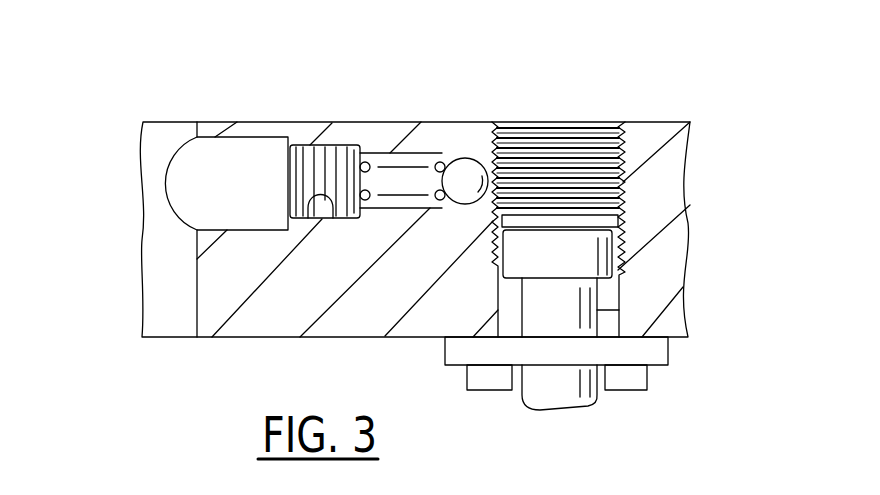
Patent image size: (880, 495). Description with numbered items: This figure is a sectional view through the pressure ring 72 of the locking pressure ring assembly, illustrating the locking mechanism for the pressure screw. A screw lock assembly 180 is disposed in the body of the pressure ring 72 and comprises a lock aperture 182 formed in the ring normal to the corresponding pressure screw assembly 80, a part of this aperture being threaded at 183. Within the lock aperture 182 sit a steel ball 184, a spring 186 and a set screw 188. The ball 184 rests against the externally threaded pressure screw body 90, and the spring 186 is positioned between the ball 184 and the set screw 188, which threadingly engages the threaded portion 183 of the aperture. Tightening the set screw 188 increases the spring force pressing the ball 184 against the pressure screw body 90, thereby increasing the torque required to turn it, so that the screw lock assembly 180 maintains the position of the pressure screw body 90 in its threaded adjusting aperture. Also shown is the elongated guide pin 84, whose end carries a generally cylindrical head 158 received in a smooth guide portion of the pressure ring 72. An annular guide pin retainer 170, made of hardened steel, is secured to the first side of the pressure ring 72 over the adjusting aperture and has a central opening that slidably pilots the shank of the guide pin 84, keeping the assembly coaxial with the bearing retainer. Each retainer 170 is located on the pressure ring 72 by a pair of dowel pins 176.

The pressure ring 72 is at (218, 285).
The pressure screw assembly 80 is at (552, 128).
The guide pin 84 is at (606, 305).
The pressure screw body 90 is at (635, 145).
The cylindrical head 158 is at (592, 253).
The guide pin retainer 170 is at (453, 352).
The dowel pin 176 is at (487, 383).
The screw lock assembly 180 is at (378, 112).
The lock aperture 182 is at (248, 137).
The threaded portion 183 is at (333, 218).
The steel ball 184 is at (465, 157).
The spring 186 is at (392, 197).
The set screw 188 is at (318, 146).